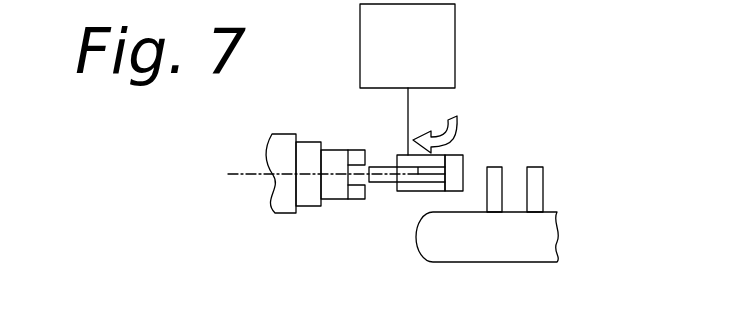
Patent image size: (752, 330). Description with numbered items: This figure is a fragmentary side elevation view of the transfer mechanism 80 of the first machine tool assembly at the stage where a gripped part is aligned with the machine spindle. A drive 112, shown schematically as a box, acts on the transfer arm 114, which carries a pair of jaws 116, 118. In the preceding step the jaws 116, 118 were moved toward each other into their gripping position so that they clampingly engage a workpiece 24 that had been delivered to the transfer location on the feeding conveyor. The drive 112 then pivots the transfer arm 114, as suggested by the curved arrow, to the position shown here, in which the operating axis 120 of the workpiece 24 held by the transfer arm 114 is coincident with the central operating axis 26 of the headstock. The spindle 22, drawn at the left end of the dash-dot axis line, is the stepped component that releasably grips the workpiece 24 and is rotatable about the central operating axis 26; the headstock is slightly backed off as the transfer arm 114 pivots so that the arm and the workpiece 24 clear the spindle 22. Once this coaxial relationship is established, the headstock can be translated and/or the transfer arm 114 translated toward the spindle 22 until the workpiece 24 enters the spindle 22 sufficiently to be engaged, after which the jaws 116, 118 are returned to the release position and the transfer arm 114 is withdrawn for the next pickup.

The first spindle 22 is at (319, 220).
The workpiece 24 is at (495, 202).
The central operating axis 26 is at (253, 174).
The first transfer mechanism 80 is at (549, 109).
The drive 112 is at (425, 70).
The transfer arm 114 is at (430, 163).
The jaw 116 is at (460, 169).
The jaw 118 is at (423, 187).
The operating axis 120 is at (384, 176).